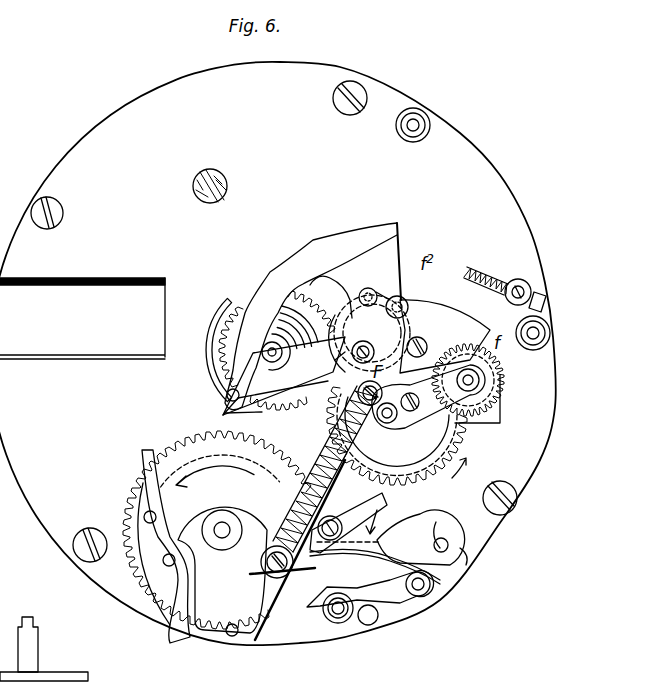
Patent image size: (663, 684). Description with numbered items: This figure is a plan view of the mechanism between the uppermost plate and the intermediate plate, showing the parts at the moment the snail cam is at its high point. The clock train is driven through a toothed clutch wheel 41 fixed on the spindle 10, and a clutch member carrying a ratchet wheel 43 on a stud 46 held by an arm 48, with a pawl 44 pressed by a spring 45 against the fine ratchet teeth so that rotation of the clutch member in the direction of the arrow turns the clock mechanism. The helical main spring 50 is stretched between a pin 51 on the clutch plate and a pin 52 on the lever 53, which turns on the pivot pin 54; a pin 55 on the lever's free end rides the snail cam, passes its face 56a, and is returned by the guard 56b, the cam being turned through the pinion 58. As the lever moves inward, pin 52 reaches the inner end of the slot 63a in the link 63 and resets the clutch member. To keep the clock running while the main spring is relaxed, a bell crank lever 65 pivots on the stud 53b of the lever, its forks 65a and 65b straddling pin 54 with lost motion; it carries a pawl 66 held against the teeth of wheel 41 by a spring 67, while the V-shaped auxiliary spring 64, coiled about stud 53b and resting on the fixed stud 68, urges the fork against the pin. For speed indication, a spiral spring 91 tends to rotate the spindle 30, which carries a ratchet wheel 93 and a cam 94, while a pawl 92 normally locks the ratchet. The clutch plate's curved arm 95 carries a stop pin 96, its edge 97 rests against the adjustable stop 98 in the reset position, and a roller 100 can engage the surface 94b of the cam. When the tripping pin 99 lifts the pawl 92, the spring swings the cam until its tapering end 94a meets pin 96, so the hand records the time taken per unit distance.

The staff or spindle 10 is at (388, 424).
The spindle 30 is at (265, 349).
The toothed clutch wheel 41 is at (470, 445).
The ratchet wheel 43 is at (506, 378).
The pawl 44 is at (472, 338).
The spring 45 is at (431, 318).
The stud 46 is at (480, 386).
The arm 48 is at (500, 412).
The helical spring 50 is at (340, 430).
The pin 51 is at (360, 393).
The pin 52 is at (278, 548).
The lever 53 is at (340, 626).
The stud 53b is at (422, 583).
The pivot pin 54 is at (450, 545).
The pin 55 is at (234, 637).
The face of snail cam 56a is at (160, 587).
The cam or guard 56b is at (140, 557).
The pinion 58 is at (92, 680).
The link 63 is at (268, 632).
The slot 63a is at (258, 572).
The auxiliary spring 64 is at (408, 600).
The bell crank lever 65 is at (377, 532).
The fork 65a is at (437, 525).
The fork 65b is at (468, 553).
The pawl or detent 66 is at (362, 503).
The spring 67 is at (440, 570).
The fixed stud 68 is at (378, 618).
The spiral spring 91 is at (229, 295).
The pawl 92 is at (268, 429).
The ratchet wheel 93 is at (312, 318).
The cam 94 is at (312, 386).
The tapering end 94a is at (225, 402).
The surface 94b is at (334, 360).
The curved arm 95 is at (311, 316).
The stop pin 96 is at (226, 393).
The edge 97 is at (401, 232).
The adjustable stop 98 is at (546, 300).
The tripping pin 99 is at (163, 491).
The roller 100 is at (363, 335).